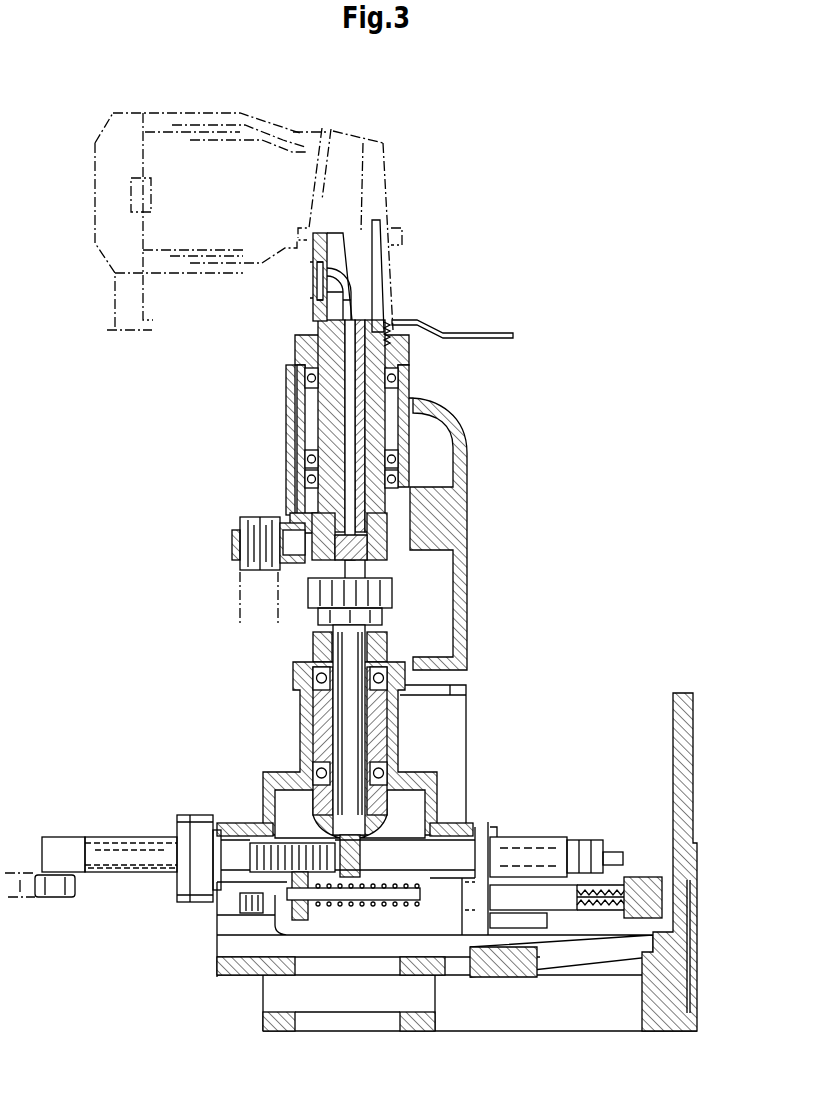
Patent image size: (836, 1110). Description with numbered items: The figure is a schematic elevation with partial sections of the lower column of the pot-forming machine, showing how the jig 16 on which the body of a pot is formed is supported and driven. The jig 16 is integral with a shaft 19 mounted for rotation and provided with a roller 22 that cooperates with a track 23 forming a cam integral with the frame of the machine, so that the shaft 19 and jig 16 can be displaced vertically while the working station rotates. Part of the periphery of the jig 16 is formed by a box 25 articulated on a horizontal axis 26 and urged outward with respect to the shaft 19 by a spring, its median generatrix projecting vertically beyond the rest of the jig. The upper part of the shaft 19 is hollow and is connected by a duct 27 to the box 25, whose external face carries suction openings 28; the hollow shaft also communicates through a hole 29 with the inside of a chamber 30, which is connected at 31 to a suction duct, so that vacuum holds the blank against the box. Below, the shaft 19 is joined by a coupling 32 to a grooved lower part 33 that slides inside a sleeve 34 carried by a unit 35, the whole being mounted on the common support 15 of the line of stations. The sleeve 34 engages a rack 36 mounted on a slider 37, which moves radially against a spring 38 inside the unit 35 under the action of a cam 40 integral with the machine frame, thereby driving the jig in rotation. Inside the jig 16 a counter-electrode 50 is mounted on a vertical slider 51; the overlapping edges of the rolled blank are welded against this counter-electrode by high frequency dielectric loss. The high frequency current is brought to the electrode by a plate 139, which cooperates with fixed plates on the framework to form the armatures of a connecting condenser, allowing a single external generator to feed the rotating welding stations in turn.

The support 15 is at (683, 748).
The jig 16 is at (357, 262).
The shaft 19 is at (370, 412).
The roller 22 is at (253, 532).
The track 23 is at (253, 592).
The box 25 is at (328, 247).
The horizontal axis 26 is at (345, 303).
The duct 27 is at (303, 325).
The suction openings 28 is at (310, 263).
The hole 29 is at (388, 545).
The chamber 30 is at (330, 525).
The suction duct connection 31 is at (362, 530).
The coupling 32 is at (335, 598).
The grooved lower part 33 is at (350, 690).
The sleeve 34 is at (380, 722).
The unit 35 is at (265, 778).
The rack 36 is at (265, 855).
The slider 37 is at (110, 860).
The spring 38 is at (345, 897).
The cam 40 is at (20, 887).
The counter-electrode 50 is at (382, 303).
The vertical slider 51 is at (375, 287).
The plate 139 is at (513, 337).